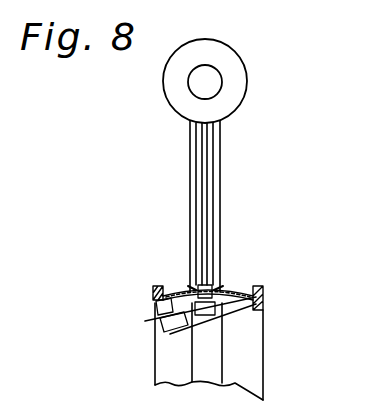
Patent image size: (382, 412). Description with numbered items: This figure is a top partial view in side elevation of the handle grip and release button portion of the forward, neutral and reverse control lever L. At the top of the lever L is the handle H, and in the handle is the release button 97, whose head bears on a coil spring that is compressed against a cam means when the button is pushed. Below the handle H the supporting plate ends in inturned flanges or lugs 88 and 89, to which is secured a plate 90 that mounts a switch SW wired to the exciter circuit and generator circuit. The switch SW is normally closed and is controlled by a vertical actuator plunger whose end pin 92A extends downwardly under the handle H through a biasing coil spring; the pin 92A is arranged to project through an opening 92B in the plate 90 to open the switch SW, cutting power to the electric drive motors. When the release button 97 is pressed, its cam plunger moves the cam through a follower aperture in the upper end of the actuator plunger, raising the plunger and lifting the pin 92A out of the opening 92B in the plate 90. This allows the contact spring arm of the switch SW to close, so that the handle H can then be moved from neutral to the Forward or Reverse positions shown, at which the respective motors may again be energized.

The handle H is at (226, 47).
The release button 97 is at (190, 86).
The control lever L is at (220, 163).
The opening 92B is at (192, 287).
The end pin 92A is at (224, 290).
The forward position Forward is at (194, 290).
The reverse position Reverse is at (228, 290).
The inturned flange or lug 88 is at (157, 293).
The inturned flange or lug 89 is at (265, 292).
The switch SW is at (160, 319).
The plate 90 is at (246, 305).